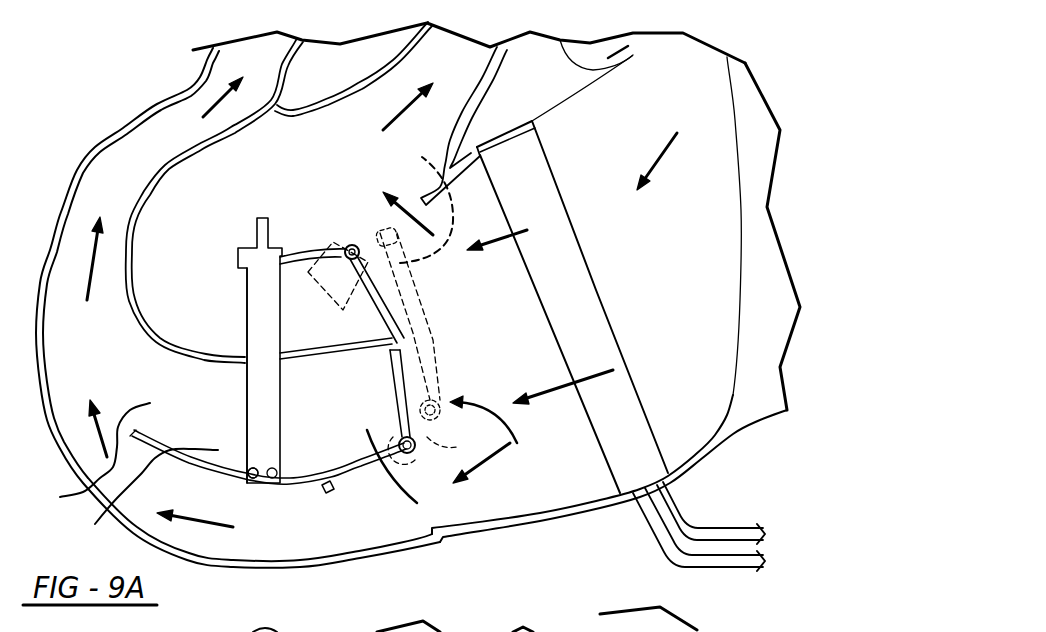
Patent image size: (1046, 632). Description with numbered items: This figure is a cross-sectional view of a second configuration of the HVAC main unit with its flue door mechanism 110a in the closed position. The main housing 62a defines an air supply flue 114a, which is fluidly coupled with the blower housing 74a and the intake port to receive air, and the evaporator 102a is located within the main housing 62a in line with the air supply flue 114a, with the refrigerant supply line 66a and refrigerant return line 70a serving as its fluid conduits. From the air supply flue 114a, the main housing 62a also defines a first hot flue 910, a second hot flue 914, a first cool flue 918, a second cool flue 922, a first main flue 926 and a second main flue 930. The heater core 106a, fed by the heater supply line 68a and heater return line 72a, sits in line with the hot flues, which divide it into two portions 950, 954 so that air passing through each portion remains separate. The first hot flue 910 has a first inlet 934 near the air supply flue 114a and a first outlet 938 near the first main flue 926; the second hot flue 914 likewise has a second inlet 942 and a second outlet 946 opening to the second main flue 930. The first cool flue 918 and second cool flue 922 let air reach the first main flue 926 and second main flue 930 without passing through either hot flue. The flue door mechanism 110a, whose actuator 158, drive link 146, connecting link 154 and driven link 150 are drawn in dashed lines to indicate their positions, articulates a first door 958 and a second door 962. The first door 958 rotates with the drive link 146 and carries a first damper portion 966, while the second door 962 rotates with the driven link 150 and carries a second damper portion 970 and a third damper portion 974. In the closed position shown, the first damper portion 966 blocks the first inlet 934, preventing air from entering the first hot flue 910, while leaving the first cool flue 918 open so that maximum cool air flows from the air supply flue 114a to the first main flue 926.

The main housing 62a is at (63, 193).
The blower housing 74a is at (630, 40).
The air supply flue 114a is at (683, 237).
The second main flue 930 is at (162, 128).
The first main flue 926 is at (343, 118).
The first cool flue 918 is at (417, 200).
The first hot flue 910 is at (210, 310).
The second cool flue 922 is at (295, 545).
The evaporator 102a is at (623, 443).
The refrigerant return line 70a is at (676, 556).
The refrigerant supply line 66a is at (736, 534).
The heater core portion 950 is at (257, 297).
The heater core portion 954 is at (257, 392).
The heater return line 72a is at (252, 480).
The heater core 106a is at (258, 480).
The heater supply line 68a is at (274, 480).
The first inlet 934 is at (357, 320).
The first damper portion 966 is at (380, 287).
The first door 958 is at (390, 318).
The second damper portion 970 is at (397, 383).
The driven link 150 is at (440, 445).
The third damper portion 974 is at (363, 478).
The second door 962 is at (336, 493).
The second inlet 942 is at (408, 476).
The flue door mechanism 110a is at (505, 439).
The actuator 158 is at (332, 290).
The drive link 146 is at (367, 232).
The connecting link 154 is at (433, 210).
The first outlet 938 is at (263, 183).
The second outlet 946 is at (89, 456).
The second hot flue 914 is at (139, 495).